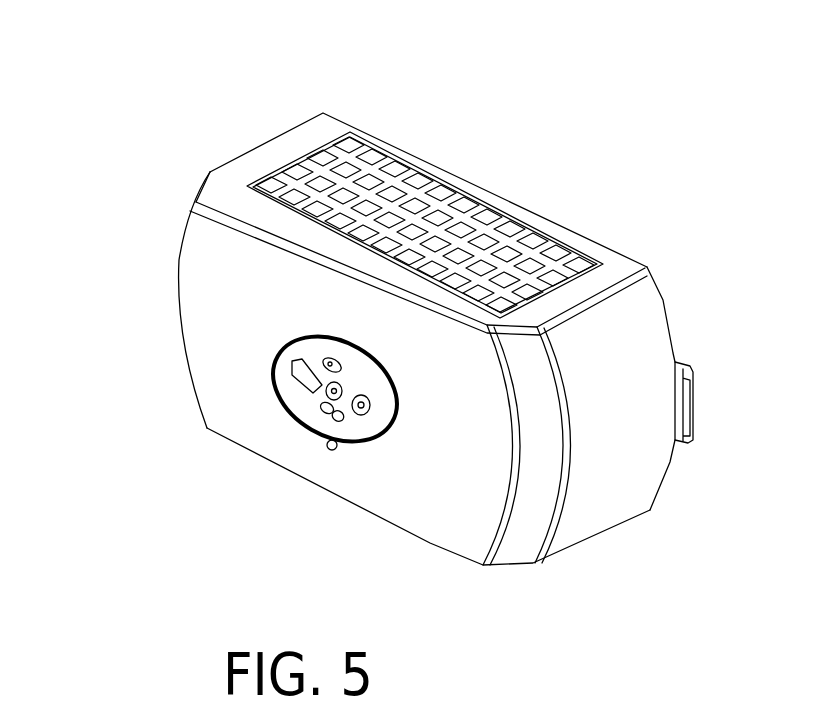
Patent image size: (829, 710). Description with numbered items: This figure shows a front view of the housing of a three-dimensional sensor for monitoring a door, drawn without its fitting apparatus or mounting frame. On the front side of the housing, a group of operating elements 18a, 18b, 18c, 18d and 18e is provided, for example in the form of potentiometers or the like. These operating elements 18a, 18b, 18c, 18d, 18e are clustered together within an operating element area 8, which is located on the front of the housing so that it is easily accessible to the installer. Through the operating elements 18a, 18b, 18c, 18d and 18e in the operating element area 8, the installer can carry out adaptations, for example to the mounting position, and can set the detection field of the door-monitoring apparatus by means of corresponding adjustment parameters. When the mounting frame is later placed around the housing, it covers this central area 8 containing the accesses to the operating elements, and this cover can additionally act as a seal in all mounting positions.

The operating element area 8 is at (292, 350).
The operating element 18a is at (336, 358).
The operating element 18b is at (338, 388).
The operating element 18c is at (366, 403).
The operating element 18d is at (332, 412).
The operating element 18e is at (300, 363).